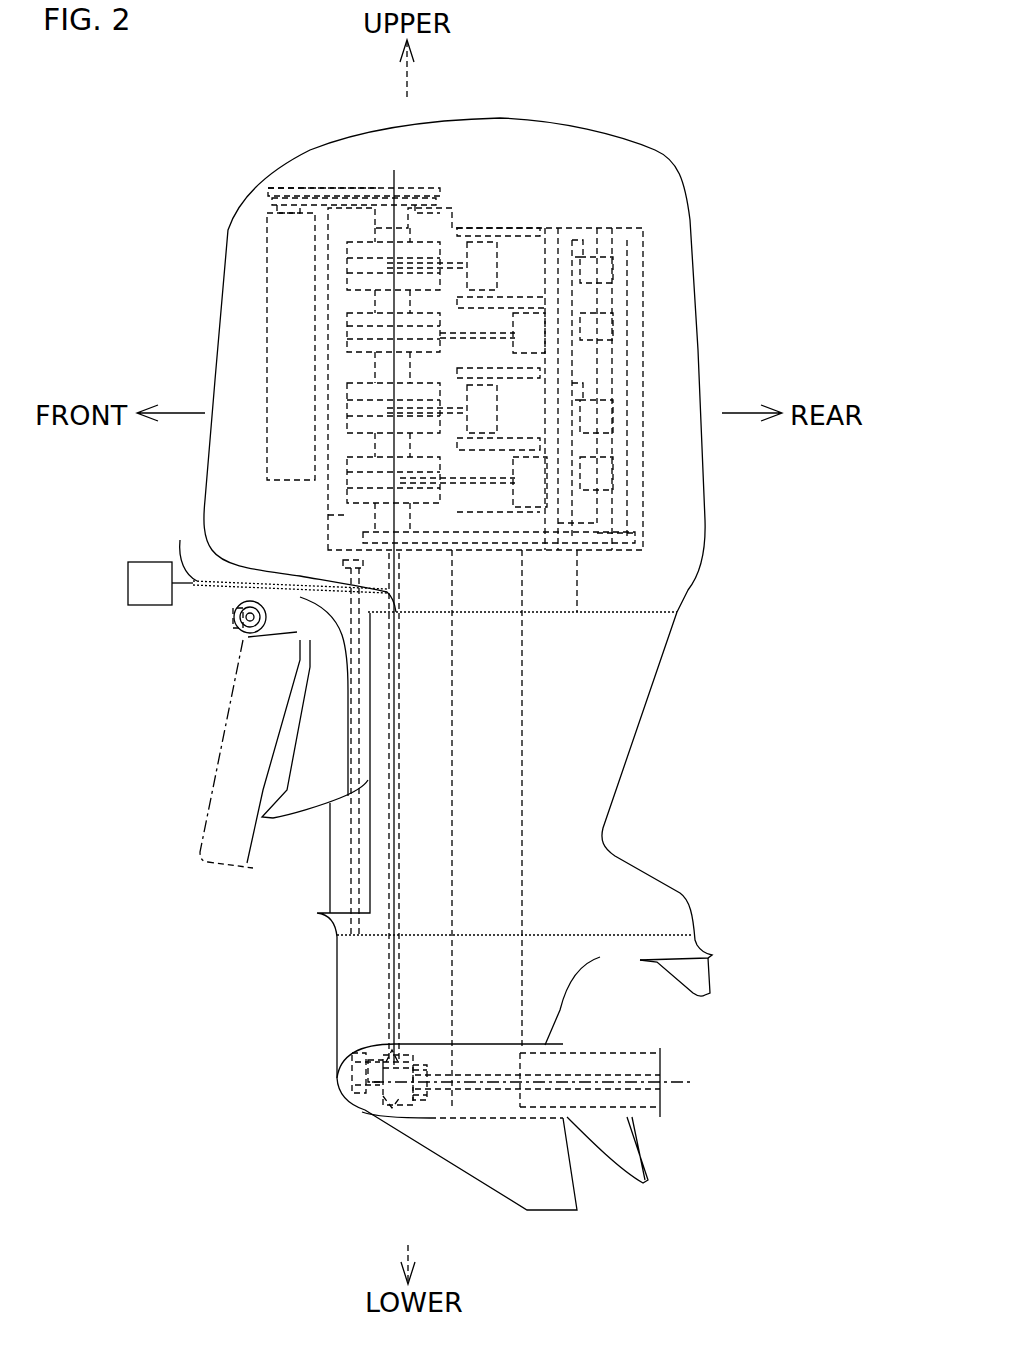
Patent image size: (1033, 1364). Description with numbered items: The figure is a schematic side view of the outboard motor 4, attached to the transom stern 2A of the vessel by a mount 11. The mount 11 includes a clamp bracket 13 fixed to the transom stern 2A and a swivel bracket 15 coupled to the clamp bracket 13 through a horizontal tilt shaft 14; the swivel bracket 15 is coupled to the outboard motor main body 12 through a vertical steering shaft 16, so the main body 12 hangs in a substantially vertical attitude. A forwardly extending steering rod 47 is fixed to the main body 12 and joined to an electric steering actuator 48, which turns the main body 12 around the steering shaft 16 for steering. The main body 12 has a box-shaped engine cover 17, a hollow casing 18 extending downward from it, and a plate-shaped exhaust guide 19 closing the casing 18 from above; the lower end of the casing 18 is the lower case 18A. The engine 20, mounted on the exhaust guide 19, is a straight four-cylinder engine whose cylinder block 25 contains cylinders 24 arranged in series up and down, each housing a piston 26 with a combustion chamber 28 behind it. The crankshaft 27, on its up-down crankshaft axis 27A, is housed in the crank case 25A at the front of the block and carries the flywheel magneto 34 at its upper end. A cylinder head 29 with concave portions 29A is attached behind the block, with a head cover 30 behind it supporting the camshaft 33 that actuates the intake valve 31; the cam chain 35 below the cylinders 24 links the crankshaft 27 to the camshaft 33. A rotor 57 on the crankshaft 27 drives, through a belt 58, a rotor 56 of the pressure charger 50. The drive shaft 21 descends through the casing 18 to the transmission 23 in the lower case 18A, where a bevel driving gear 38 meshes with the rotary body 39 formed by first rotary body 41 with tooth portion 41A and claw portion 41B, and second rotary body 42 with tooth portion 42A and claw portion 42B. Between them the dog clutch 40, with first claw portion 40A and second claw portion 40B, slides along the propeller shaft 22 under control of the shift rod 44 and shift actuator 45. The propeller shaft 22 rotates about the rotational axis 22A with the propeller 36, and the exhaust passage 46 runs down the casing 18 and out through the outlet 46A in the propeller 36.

The transom stern 2A is at (213, 803).
The outboard motor 4 is at (630, 107).
The mount 11 is at (273, 862).
The outboard motor main body 12 is at (214, 366).
The clamp bracket 13 is at (317, 725).
The tilt shaft 14 is at (243, 615).
The swivel bracket 15 is at (337, 875).
The steering shaft 16 is at (350, 822).
The engine cover 17 is at (705, 462).
The casing 18 is at (640, 745).
The lower case 18A is at (337, 997).
The exhaust guide 19 is at (580, 568).
The engine 20 is at (652, 237).
The drive shaft 21 is at (400, 760).
The propeller shaft 22 is at (505, 1090).
The rotational axis 22A is at (685, 1082).
The transmission 23 is at (357, 1097).
The cylinder 24 is at (553, 230).
The cylinder block 25 is at (465, 227).
The crank case 25A is at (327, 517).
The piston 26 is at (497, 260).
The crankshaft 27 is at (347, 282).
The crankshaft axis 27A is at (393, 172).
The combustion chamber 28 is at (552, 227).
The cylinder head 29 is at (578, 228).
The concave portion 29A is at (570, 330).
The head cover 30 is at (622, 228).
The intake valve 31 is at (594, 462).
The camshaft 33 is at (625, 275).
The flywheel magneto 34 is at (453, 210).
The cam chain 35 is at (637, 536).
The propeller 36 is at (625, 1165).
The driving gear 38 is at (405, 1048).
The rotary body 39 is at (417, 1198).
The dog clutch 40 is at (360, 1097).
The first claw portion 40A is at (377, 1088).
The second claw portion 40B is at (435, 1072).
The first rotary body 41 is at (370, 1131).
The tooth portion 41A is at (377, 1052).
The claw portion 41B is at (380, 1047).
The second rotary body 42 is at (399, 1136).
The tooth portion 42A is at (413, 1057).
The claw portion 42B is at (437, 1110).
The shift rod 44 is at (343, 973).
The shift actuator 45 is at (340, 567).
The exhaust passage 46 is at (520, 697).
The outlet 46A is at (672, 1062).
The steering rod 47 is at (178, 543).
The steering actuator 48 is at (128, 588).
The pressure charger 50 is at (265, 320).
The rotor 56 is at (283, 187).
The rotor 57 is at (355, 187).
The belt 58 is at (317, 185).